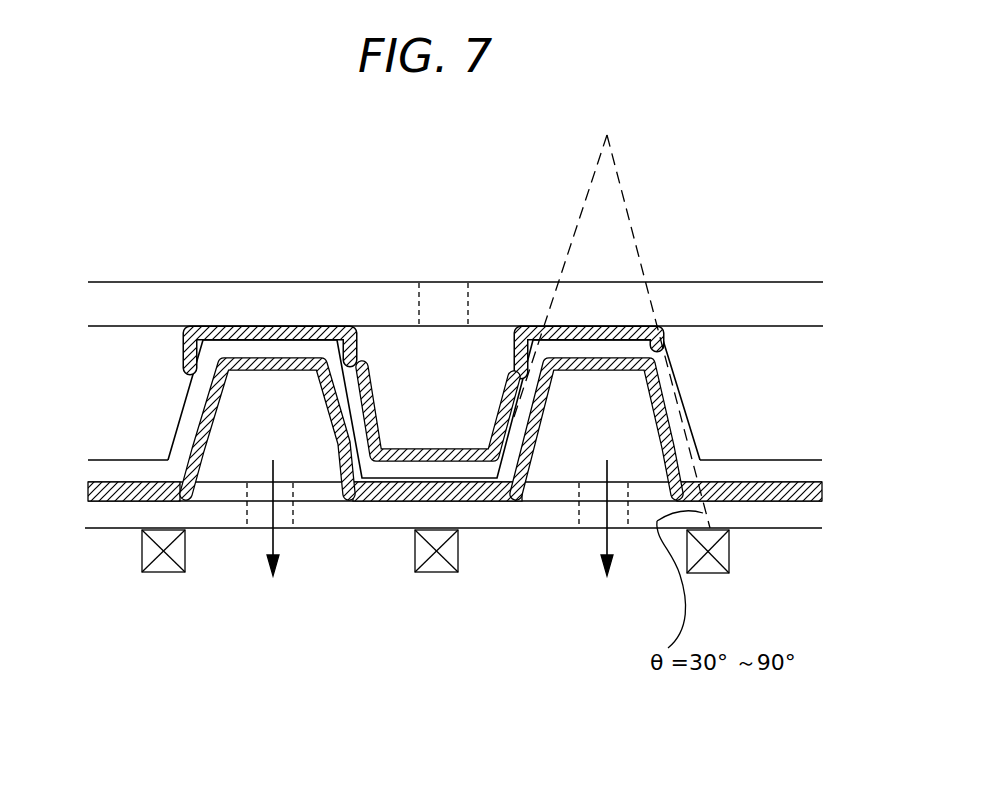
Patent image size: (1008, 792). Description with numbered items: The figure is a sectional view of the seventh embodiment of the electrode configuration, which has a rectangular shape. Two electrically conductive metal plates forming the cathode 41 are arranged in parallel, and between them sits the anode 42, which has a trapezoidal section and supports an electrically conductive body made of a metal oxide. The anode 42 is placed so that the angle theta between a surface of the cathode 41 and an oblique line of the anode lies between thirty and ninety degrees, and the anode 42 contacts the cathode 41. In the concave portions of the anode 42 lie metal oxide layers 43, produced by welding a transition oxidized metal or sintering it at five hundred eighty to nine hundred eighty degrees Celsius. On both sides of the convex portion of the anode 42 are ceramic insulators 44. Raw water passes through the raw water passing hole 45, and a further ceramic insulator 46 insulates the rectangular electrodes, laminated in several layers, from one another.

The cathode 41 is at (773, 298).
The anode 42 is at (740, 468).
The welded layer or sintered layer 43 is at (222, 392).
The insulator 44 is at (262, 326).
The raw water passing hole 45 is at (462, 280).
The insulator for laminated electrodes 46 is at (180, 552).